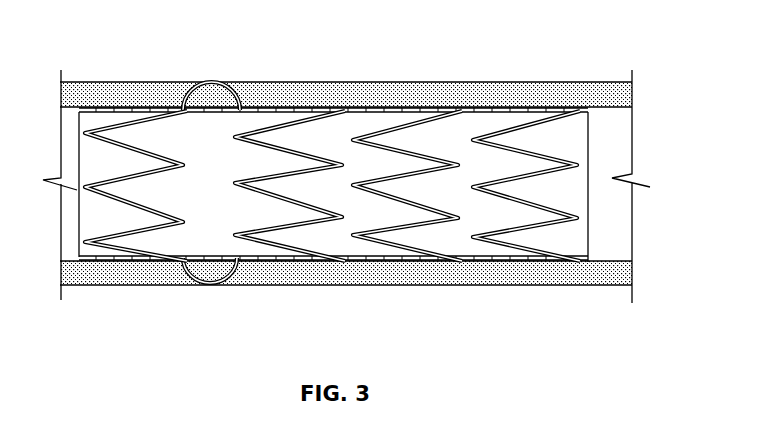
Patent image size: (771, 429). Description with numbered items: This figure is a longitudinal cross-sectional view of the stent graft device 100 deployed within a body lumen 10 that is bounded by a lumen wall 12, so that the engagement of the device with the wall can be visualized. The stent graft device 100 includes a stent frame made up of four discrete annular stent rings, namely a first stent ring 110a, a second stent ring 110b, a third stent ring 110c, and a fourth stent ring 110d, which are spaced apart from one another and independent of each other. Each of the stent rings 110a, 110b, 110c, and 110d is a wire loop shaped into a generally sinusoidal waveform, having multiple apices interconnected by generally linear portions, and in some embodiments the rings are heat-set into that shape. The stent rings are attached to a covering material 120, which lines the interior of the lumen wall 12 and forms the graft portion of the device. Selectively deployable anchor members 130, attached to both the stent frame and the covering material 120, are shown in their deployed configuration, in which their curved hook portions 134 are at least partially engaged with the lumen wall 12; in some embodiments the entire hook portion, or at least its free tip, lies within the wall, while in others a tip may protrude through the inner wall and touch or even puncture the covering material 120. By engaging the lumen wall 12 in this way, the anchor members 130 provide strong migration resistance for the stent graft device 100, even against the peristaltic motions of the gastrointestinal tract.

The body lumen 10 is at (642, 117).
The lumen wall 12 is at (301, 82).
The stent graft device 100 is at (562, 101).
The covering material 120 is at (490, 108).
The anchor members 130 is at (205, 290).
The hook portions 134 is at (183, 73).
The first stent ring 110a is at (107, 246).
The second stent ring 110b is at (270, 245).
The third stent ring 110c is at (392, 245).
The fourth stent ring 110d is at (503, 245).